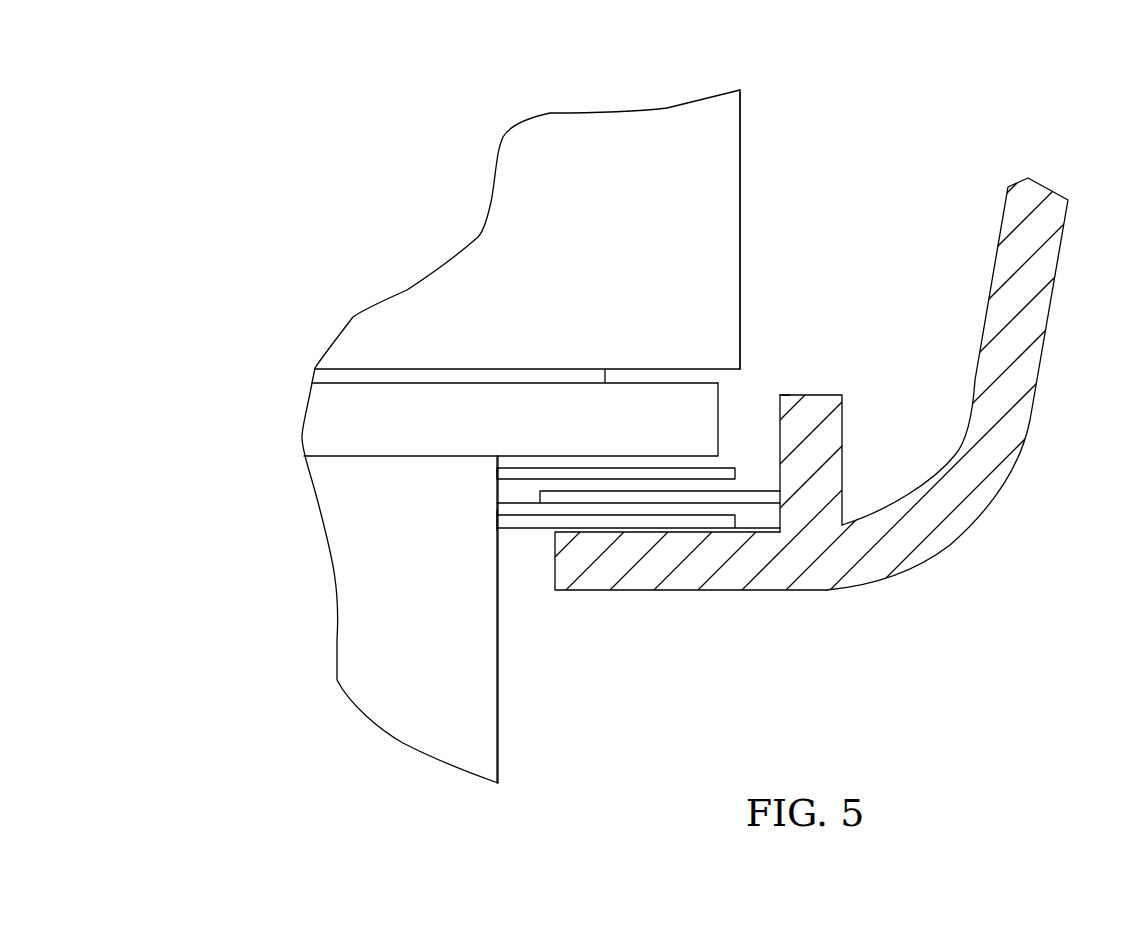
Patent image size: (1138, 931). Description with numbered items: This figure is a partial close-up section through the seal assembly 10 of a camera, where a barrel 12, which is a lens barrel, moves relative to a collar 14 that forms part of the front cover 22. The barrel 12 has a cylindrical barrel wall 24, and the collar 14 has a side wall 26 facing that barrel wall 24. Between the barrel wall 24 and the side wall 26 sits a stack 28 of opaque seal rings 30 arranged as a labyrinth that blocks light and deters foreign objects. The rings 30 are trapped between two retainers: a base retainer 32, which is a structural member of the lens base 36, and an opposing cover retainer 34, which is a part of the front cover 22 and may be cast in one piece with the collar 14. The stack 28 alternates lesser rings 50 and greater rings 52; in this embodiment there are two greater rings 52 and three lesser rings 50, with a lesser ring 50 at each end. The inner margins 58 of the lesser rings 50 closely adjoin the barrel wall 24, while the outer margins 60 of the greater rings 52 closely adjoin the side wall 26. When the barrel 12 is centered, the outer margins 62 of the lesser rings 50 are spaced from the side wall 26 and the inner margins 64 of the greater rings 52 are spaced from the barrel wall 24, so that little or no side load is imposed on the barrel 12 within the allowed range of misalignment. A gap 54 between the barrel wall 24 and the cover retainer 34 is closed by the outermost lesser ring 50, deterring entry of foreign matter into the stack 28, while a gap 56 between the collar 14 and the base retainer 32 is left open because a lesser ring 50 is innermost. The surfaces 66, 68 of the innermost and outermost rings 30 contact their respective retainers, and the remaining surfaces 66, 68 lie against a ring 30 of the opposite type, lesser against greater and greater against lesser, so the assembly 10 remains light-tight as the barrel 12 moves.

The seal assembly 10 is at (333, 143).
The barrel 12 is at (403, 743).
The collar 14 is at (827, 442).
The front cover 22 is at (1043, 360).
The barrel wall 24 is at (493, 750).
The side wall 26 is at (779, 405).
The stack 28 is at (667, 470).
The seal rings 30 is at (208, 480).
The base retainer 32 is at (486, 395).
The cover retainer 34 is at (827, 590).
The lens base 36 is at (742, 130).
The lesser rings 50 is at (498, 470).
The greater rings 52 is at (548, 496).
The gap 54 is at (518, 597).
The gap 56 is at (752, 393).
The inner margins 58 is at (497, 522).
The outer margins 60 is at (783, 493).
The outer margins 62 is at (742, 520).
The inner margins 64 is at (533, 487).
The surfaces 66 is at (647, 530).
The surfaces 68 is at (590, 508).